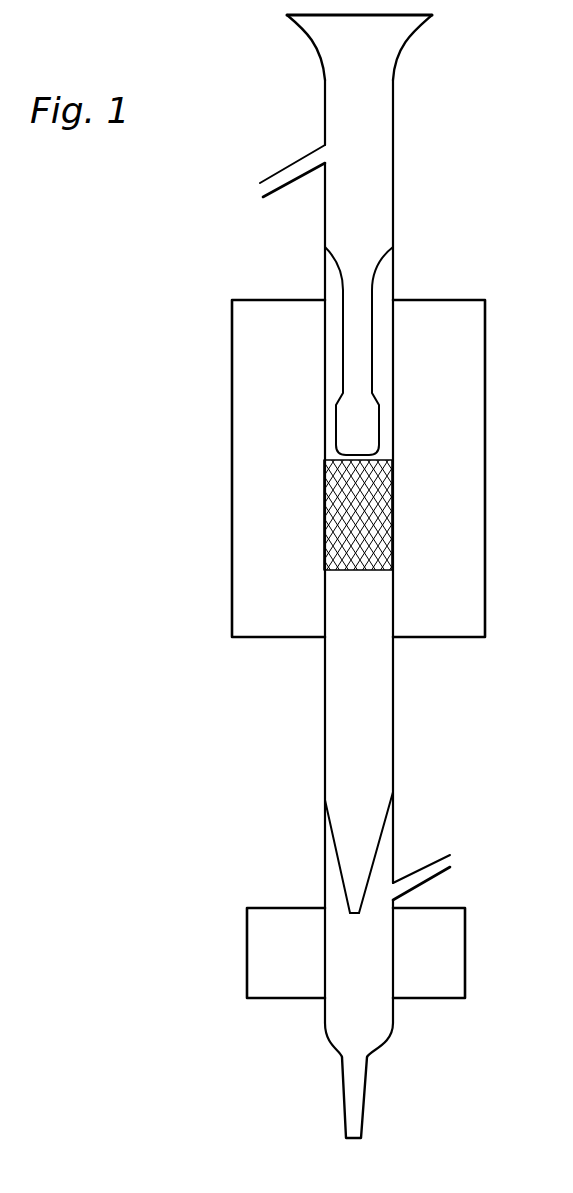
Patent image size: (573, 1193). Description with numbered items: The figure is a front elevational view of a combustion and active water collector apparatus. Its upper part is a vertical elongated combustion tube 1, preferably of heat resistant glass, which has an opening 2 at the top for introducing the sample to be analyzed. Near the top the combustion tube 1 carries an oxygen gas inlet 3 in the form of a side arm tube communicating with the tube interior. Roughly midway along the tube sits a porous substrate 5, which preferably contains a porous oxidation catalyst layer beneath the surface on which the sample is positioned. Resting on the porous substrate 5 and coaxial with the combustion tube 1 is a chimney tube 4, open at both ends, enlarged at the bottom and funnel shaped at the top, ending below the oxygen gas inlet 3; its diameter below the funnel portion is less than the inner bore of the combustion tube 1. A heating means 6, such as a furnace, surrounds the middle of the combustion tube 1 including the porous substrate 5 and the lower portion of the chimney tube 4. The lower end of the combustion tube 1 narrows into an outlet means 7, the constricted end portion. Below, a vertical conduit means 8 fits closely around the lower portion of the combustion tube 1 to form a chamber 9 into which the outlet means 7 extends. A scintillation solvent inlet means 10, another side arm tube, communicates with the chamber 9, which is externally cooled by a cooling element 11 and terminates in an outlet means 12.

The combustion tube 1 is at (325, 107).
The opening 2 is at (387, 47).
The oxygen gas inlet 3 is at (275, 196).
The chimney tube 4 is at (382, 270).
The porous substrate 5 is at (323, 500).
The heating means 6 is at (485, 438).
The outlet means 7 is at (343, 890).
The conduit means 8 is at (323, 841).
The chamber 9 is at (337, 975).
The scintillation solvent inlet means 10 is at (423, 863).
The cooling element 11 is at (465, 938).
The outlet means 12 is at (342, 1103).